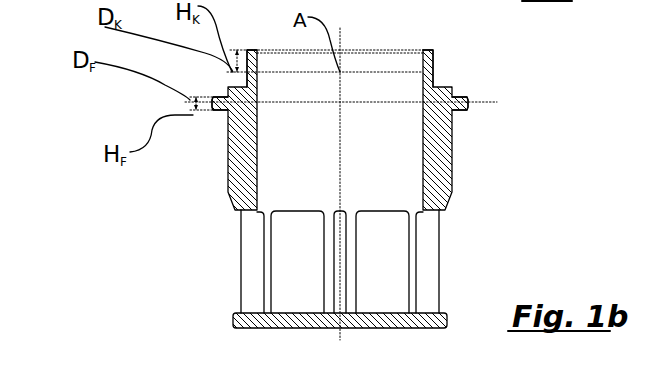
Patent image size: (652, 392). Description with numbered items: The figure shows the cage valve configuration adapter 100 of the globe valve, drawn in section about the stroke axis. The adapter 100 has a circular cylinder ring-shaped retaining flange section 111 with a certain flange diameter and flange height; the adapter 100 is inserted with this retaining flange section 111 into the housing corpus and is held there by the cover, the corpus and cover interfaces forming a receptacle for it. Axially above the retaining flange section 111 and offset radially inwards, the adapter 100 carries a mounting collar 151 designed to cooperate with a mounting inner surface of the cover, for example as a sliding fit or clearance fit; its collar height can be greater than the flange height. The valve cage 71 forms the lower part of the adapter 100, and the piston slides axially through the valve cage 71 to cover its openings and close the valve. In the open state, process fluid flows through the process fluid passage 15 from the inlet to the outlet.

The process fluid passage 15 is at (363, 0).
The mounting collar 151 is at (442, 68).
The retaining flange section 111 is at (466, 121).
The adapter 100 is at (397, 125).
The valve cage 71 is at (381, 285).